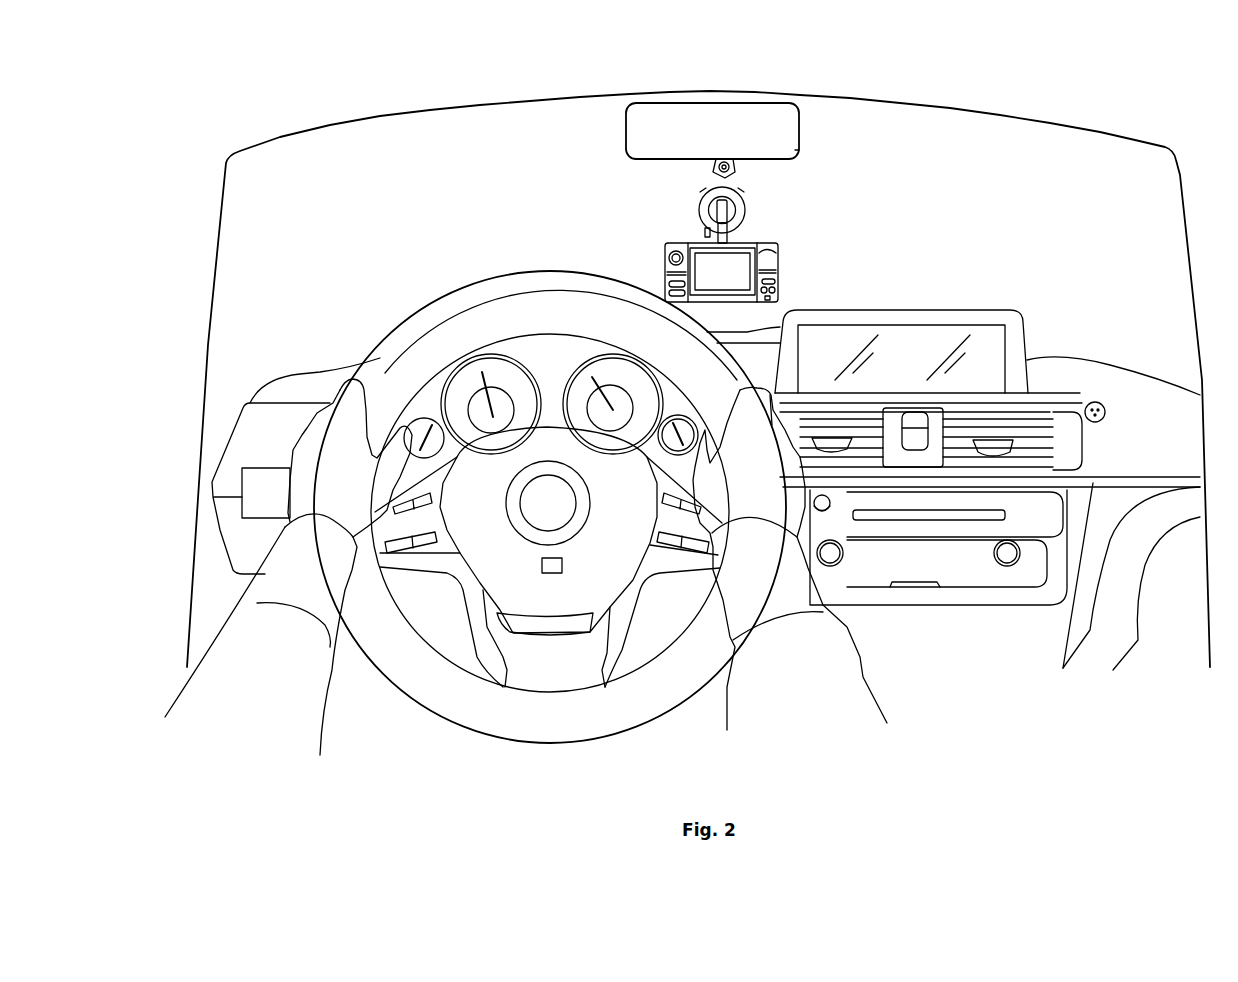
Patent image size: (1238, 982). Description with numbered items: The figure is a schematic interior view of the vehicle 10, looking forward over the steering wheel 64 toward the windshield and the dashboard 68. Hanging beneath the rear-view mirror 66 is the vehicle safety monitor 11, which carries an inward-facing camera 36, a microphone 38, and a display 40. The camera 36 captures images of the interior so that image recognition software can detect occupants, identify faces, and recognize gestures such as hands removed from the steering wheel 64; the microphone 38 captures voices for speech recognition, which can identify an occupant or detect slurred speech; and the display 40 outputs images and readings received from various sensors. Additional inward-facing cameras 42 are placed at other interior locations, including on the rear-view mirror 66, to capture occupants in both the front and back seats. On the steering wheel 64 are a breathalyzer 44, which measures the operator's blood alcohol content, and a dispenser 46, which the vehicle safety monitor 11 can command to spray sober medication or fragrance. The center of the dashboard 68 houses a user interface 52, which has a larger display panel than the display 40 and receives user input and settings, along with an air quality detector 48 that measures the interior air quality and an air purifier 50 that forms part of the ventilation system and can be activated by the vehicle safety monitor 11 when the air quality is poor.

The vehicle 10 is at (721, 44).
The vehicle safety monitor 11 is at (750, 243).
The inward-facing camera 36 is at (665, 248).
The microphone 38 is at (777, 288).
The display 40 is at (730, 267).
The inward-facing cameras 42 is at (799, 158).
The breathalyzer 44 is at (545, 574).
The dispenser 46 is at (510, 473).
The air quality detector 48 is at (825, 508).
The air purifier 50 is at (977, 460).
The user interface 52 is at (960, 322).
The steering wheel 64 is at (507, 303).
The rear-view mirror 66 is at (626, 131).
The dashboard 68 is at (750, 366).